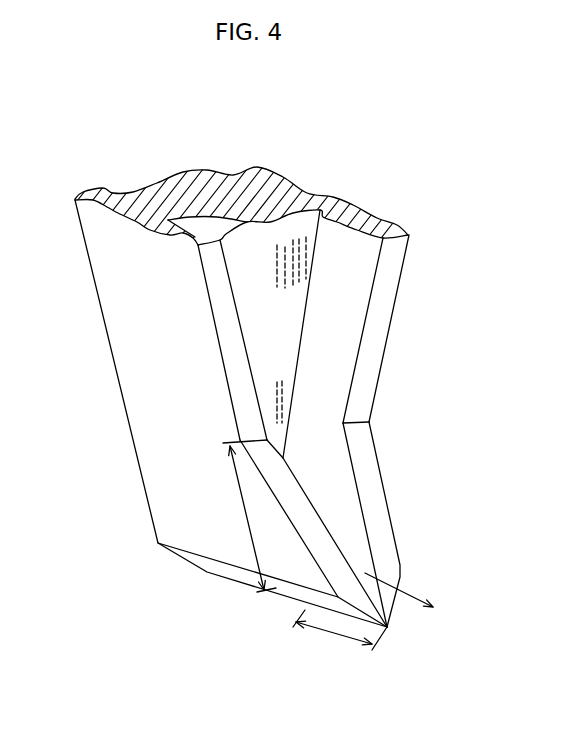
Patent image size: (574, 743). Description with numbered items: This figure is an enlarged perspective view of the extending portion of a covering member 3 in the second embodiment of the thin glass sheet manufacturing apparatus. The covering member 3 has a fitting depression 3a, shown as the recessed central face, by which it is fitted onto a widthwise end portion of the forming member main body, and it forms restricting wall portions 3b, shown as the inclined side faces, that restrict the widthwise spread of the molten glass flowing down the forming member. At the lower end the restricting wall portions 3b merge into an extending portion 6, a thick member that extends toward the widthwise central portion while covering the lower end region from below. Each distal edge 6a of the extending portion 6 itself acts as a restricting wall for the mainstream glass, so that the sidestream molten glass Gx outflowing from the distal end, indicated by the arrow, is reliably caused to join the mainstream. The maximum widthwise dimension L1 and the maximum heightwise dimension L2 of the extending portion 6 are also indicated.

The covering member 3 is at (155, 313).
The fitting depression 3a is at (248, 245).
The restricting wall portion 3b is at (236, 355).
The extending portion 6 is at (299, 556).
The distal edge of extending portion 6a is at (313, 533).
The maximum widthwise dimension of extending portion L1 is at (330, 632).
The maximum heightwise dimension of extending portion L2 is at (243, 499).
The sidestream molten glass Gx is at (403, 593).